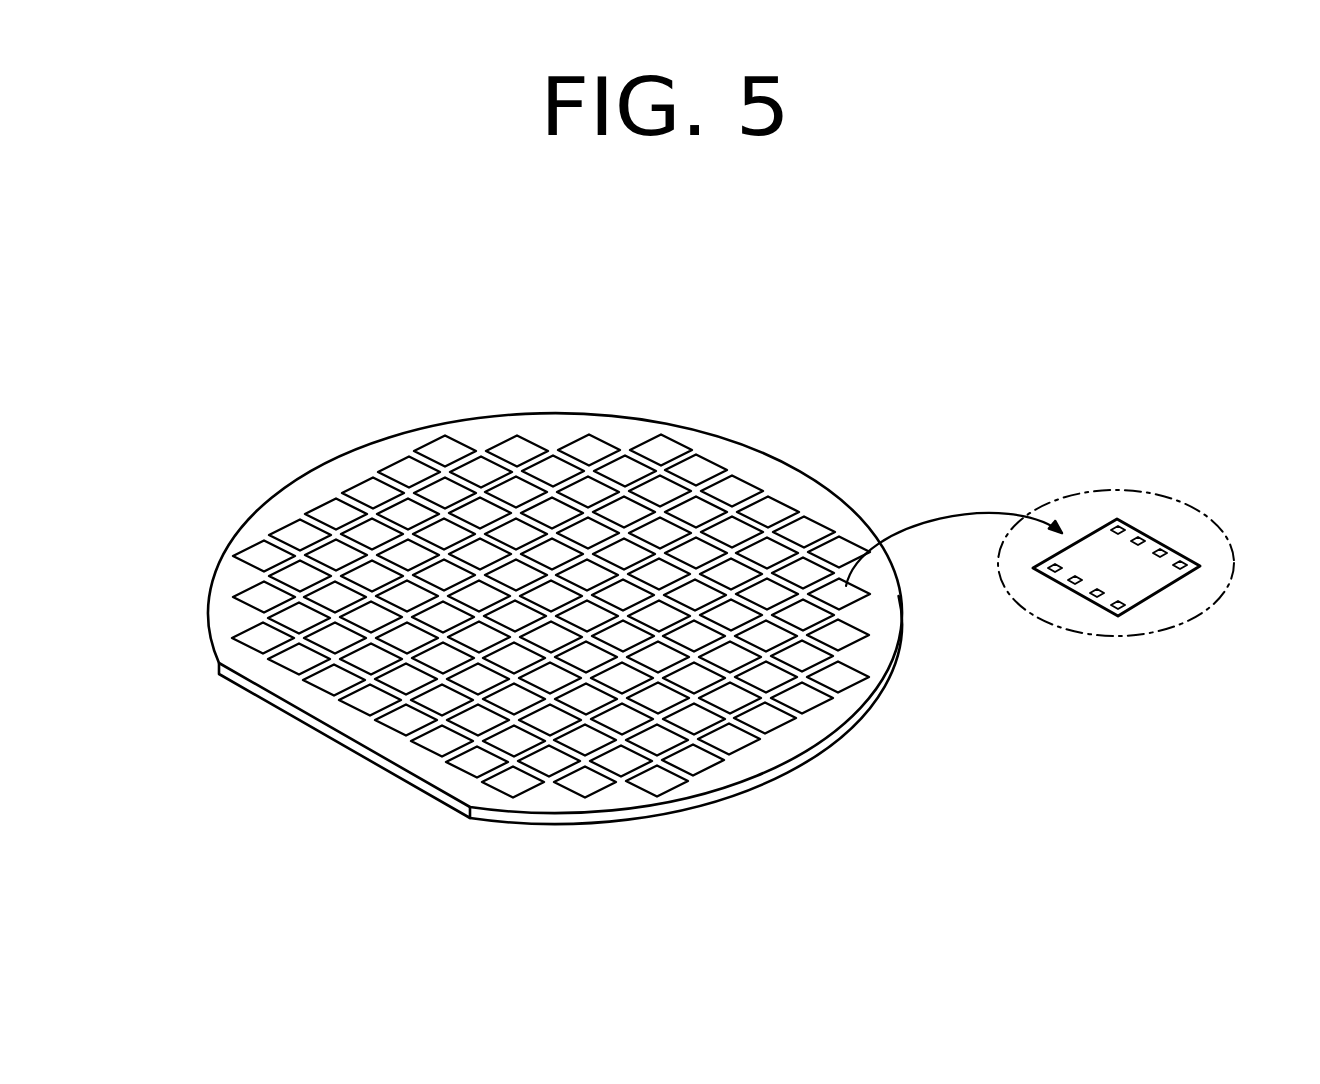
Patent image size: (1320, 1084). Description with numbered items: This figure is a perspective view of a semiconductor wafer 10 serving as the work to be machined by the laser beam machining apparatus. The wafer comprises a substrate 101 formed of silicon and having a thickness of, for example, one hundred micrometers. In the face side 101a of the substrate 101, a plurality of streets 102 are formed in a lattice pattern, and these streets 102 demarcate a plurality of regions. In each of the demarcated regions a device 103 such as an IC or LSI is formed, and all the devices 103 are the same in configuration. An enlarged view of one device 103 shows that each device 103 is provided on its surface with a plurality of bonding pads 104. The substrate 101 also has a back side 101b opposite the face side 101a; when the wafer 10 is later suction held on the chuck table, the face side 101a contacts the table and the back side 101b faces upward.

The semiconductor wafer 10 is at (592, 582).
The substrate 101 is at (592, 602).
The face side 101a is at (767, 478).
The back side 101b is at (728, 800).
The streets 102 is at (492, 823).
The devices 103 is at (733, 592).
The bonding pads 104 is at (1178, 570).